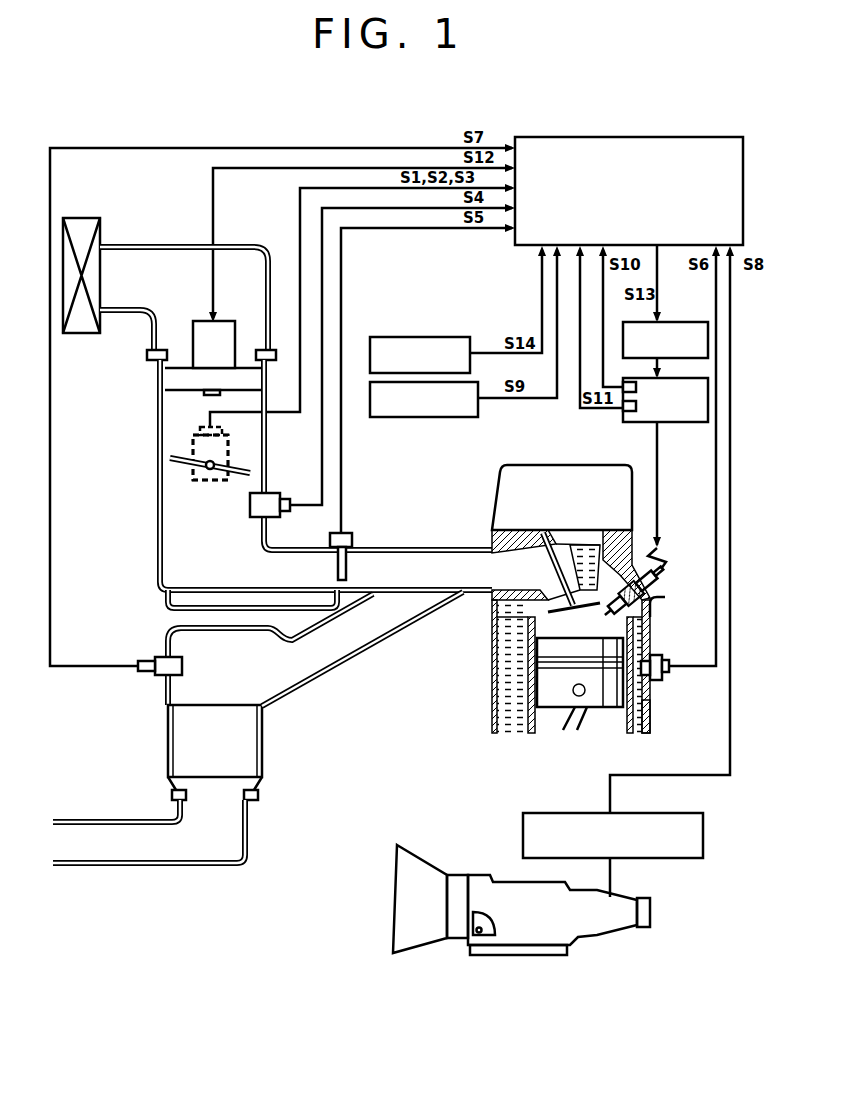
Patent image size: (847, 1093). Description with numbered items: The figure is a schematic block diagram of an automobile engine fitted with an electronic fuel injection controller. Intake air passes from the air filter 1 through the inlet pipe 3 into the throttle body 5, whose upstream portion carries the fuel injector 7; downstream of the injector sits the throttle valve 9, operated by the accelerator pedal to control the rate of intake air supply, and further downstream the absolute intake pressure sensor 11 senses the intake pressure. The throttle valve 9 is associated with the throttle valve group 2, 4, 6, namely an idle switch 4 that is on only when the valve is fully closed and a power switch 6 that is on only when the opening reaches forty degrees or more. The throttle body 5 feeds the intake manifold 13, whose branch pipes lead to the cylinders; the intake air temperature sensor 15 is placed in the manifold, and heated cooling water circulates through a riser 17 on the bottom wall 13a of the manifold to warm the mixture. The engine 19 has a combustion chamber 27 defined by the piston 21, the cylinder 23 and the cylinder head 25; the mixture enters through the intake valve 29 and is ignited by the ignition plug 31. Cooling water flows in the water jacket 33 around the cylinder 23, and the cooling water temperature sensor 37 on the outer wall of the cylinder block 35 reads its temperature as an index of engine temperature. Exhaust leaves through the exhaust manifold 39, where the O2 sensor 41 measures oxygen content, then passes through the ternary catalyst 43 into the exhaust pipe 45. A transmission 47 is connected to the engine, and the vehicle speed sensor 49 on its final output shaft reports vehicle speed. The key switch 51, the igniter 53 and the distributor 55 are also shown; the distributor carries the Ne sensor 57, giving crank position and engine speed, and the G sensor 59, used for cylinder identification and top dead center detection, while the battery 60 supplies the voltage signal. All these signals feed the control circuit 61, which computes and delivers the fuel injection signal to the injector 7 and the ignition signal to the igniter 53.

The air filter 1 is at (83, 336).
The inlet pipe 3 is at (150, 248).
The throttle body 5 is at (158, 398).
The fuel injector 7 is at (195, 321).
The throttle valve 2 is at (193, 437).
The idle switch 4 is at (210, 457).
The power switch 6 is at (210, 457).
The throttle valve 9 is at (176, 466).
The absolute intake pressure sensor 11 is at (268, 493).
The intake manifold 13 is at (430, 596).
The bottom wall of the intake manifold 13a is at (193, 592).
The intake air temperature sensor 15 is at (330, 537).
The riser 17 is at (166, 606).
The engine 19 is at (527, 465).
The piston 21 is at (590, 710).
The cylinder 23 is at (650, 637).
The cylinder head 25 is at (497, 510).
The combustion chamber 27 is at (562, 627).
The intake valve 29 is at (555, 590).
The ignition plug 31 is at (640, 578).
The water jacket 33 is at (500, 708).
The cylinder block 35 is at (650, 725).
The cooling water temperature sensor 37 is at (660, 682).
The exhaust manifold 39 is at (360, 655).
The O2 sensor 41 is at (155, 680).
The ternary catalyst 43 is at (165, 735).
The exhaust pipe 45 is at (115, 865).
The transmission 47 is at (500, 955).
The vehicle speed sensor 49 is at (660, 858).
The key switch 51 is at (400, 417).
The igniter 53 is at (666, 322).
The distributor 55 is at (670, 422).
The Ne sensor 57 is at (630, 382).
The G sensor 59 is at (628, 412).
The battery 60 is at (400, 337).
The control circuit 61 is at (610, 137).